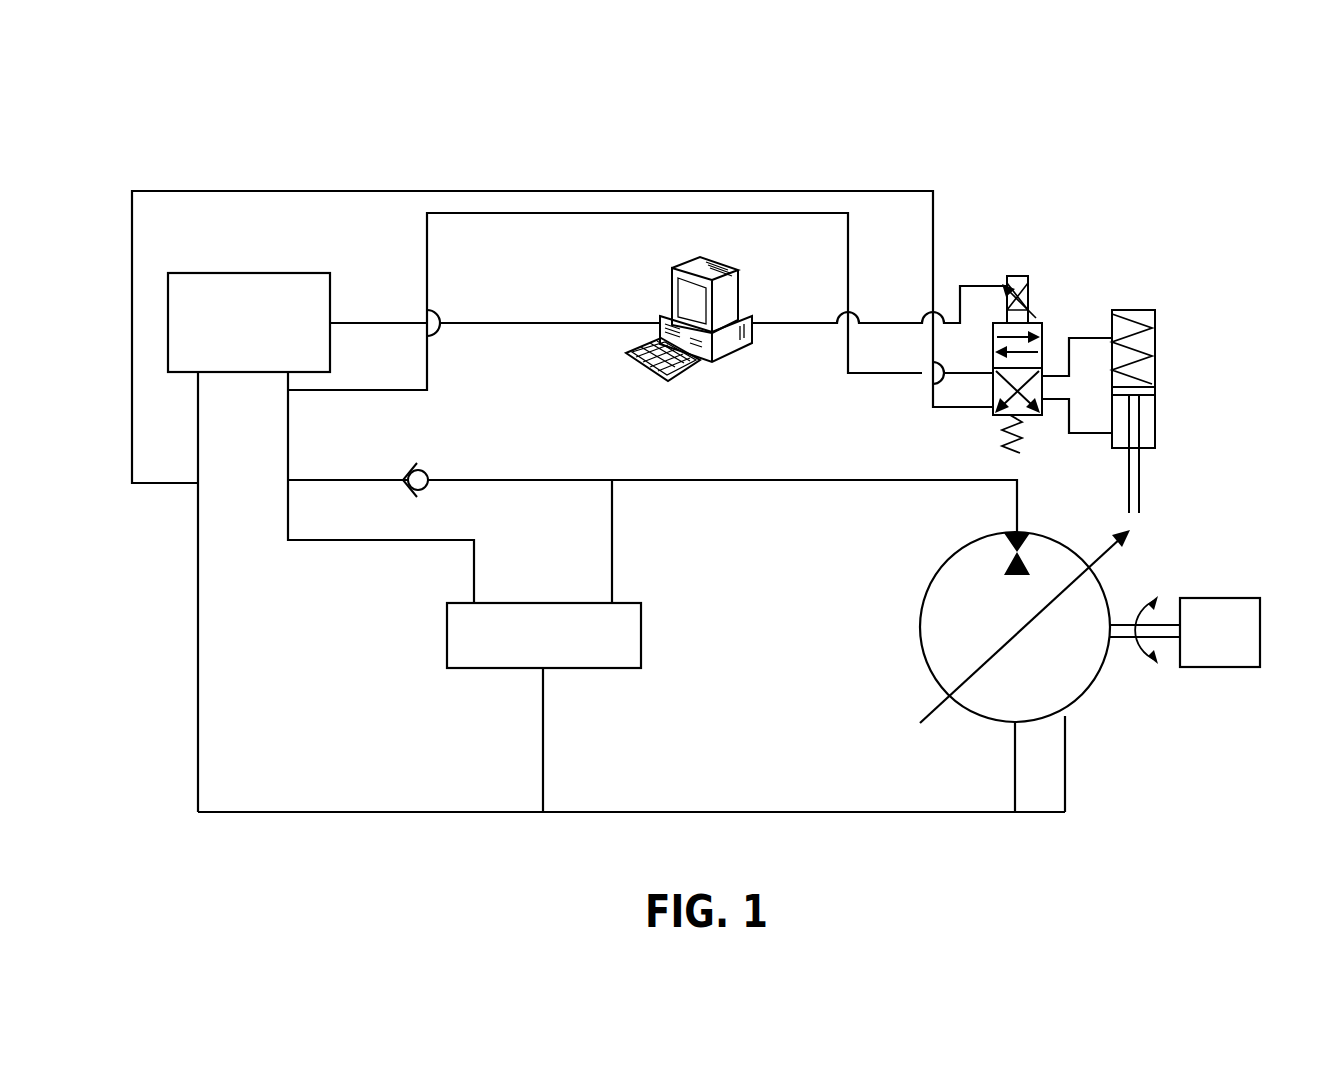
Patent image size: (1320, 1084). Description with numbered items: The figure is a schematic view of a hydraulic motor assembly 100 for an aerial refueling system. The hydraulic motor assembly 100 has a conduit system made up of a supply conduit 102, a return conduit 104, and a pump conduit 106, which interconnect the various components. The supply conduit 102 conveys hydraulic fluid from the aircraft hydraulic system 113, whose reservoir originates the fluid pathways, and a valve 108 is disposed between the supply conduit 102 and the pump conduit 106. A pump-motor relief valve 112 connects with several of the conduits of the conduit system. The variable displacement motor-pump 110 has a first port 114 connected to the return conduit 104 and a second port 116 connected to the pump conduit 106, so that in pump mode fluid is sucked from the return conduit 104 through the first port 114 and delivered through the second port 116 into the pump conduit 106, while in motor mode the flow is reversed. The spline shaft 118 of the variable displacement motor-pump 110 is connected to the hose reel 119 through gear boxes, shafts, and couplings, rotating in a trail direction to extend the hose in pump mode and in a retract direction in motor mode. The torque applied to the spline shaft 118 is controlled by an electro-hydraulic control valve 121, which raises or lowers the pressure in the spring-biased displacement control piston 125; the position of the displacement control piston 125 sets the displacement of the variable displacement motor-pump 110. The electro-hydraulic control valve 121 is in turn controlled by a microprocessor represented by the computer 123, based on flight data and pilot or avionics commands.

The hydraulic motor assembly 100 is at (1057, 139).
The supply conduit 102 is at (343, 540).
The return conduit 104 is at (590, 812).
The pump conduit 106 is at (717, 481).
The valve 108 is at (424, 457).
The variable displacement motor-pump 110 is at (1130, 553).
The pump-motor relief valve 112 is at (434, 682).
The aircraft hydraulic system 113 is at (274, 272).
The first port 114 is at (1008, 726).
The second port 116 is at (1023, 528).
The spline shaft 118 is at (1127, 640).
The hose reel 119 is at (1218, 667).
The electro-hydraulic control valve 121 is at (1044, 270).
The computer 123 is at (724, 263).
The displacement control piston 125 is at (1180, 329).